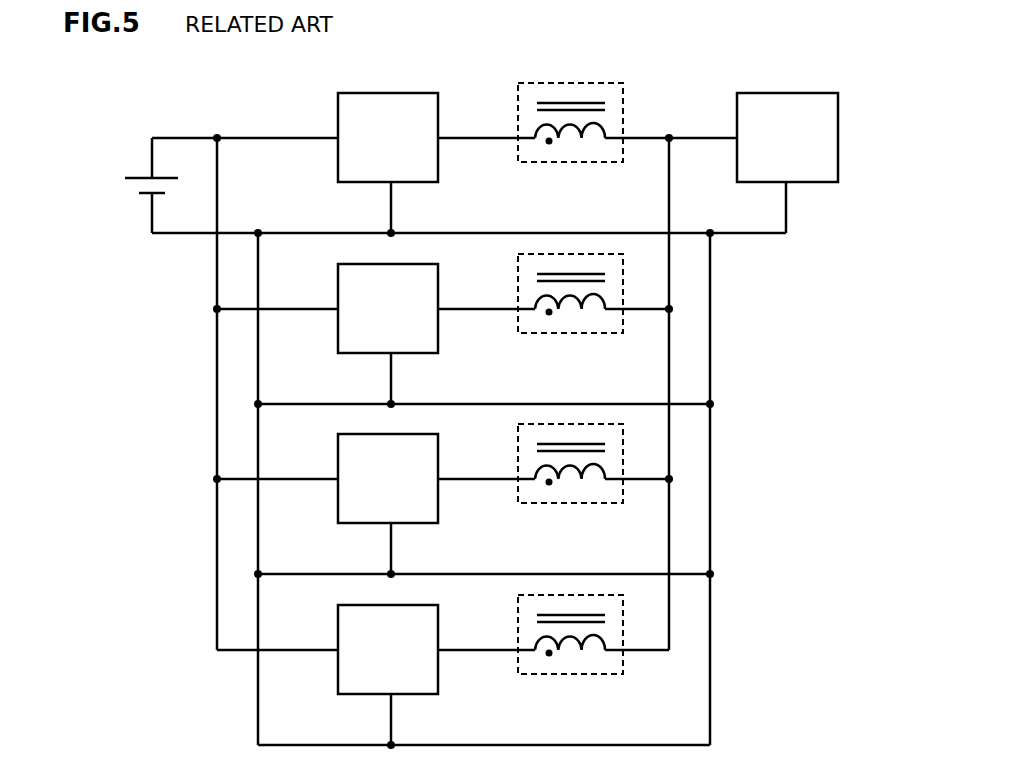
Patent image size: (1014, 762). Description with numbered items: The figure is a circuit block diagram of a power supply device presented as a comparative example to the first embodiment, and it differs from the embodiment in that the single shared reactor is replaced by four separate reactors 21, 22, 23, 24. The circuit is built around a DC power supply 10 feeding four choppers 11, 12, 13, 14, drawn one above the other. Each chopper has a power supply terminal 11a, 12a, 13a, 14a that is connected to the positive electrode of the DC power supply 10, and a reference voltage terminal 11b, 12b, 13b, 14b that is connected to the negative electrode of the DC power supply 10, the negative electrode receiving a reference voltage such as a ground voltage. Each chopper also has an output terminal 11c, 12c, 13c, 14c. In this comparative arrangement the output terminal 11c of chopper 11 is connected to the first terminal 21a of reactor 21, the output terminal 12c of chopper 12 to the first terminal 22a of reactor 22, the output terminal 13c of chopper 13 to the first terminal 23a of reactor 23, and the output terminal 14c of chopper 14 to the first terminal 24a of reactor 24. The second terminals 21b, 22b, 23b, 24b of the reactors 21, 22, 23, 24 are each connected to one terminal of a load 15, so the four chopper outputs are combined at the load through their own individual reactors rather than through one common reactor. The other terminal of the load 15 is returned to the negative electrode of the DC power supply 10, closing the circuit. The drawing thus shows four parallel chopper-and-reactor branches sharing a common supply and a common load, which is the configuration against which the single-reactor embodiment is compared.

The DC power supply 10 is at (148, 175).
The chopper 11 is at (353, 93).
The power supply terminal 11a is at (338, 141).
The reference voltage terminal 11b is at (390, 188).
The output terminal 11c is at (440, 141).
The chopper 12 is at (353, 264).
The power supply terminal 12a is at (338, 312).
The reference voltage terminal 12b is at (390, 359).
The output terminal 12c is at (440, 312).
The chopper 13 is at (353, 434).
The power supply terminal 13a is at (338, 482).
The reference voltage terminal 13b is at (390, 529).
The output terminal 13c is at (440, 482).
The chopper 14 is at (353, 605).
The power supply terminal 14a is at (338, 653).
The reference voltage terminal 14b is at (390, 700).
The output terminal 14c is at (440, 653).
The load 15 is at (786, 93).
The reactor 21 is at (517, 93).
The first terminal 21a is at (519, 140).
The second terminal 21b is at (621, 141).
The reactor 22 is at (517, 264).
The first terminal 22a is at (519, 311).
The second terminal 22b is at (621, 312).
The reactor 23 is at (517, 434).
The first terminal 23a is at (519, 481).
The second terminal 23b is at (621, 482).
The reactor 24 is at (517, 605).
The first terminal 24a is at (519, 652).
The second terminal 24b is at (621, 653).